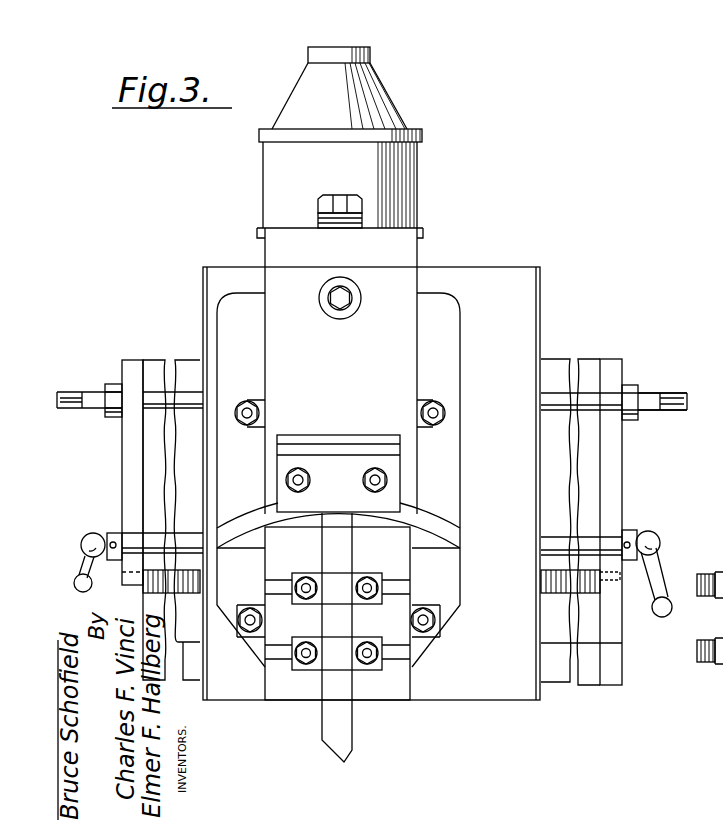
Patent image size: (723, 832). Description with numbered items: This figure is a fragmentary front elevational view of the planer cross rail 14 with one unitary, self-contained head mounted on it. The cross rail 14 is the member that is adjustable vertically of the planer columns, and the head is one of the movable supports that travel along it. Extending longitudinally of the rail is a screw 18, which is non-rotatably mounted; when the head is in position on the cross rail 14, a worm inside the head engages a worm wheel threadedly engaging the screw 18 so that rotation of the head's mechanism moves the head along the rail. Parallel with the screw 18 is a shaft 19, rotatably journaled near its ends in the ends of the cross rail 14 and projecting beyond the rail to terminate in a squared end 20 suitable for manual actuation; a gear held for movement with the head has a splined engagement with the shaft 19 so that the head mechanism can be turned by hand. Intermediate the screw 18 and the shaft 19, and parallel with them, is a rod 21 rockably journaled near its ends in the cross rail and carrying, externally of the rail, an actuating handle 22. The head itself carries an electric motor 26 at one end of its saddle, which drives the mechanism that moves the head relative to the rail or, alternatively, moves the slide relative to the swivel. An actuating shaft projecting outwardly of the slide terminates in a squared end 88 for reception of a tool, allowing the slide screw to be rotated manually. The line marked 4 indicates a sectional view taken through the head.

The section line 4- 4 is at (438, 188).
The cross rail 14 is at (586, 678).
The screw 18 is at (585, 592).
The shaft 19 is at (554, 396).
The squared end 20 is at (646, 395).
The rod 21 is at (585, 540).
The actuating handle 22 is at (664, 572).
The electric motor 26 is at (273, 192).
The squared end 88 is at (352, 294).